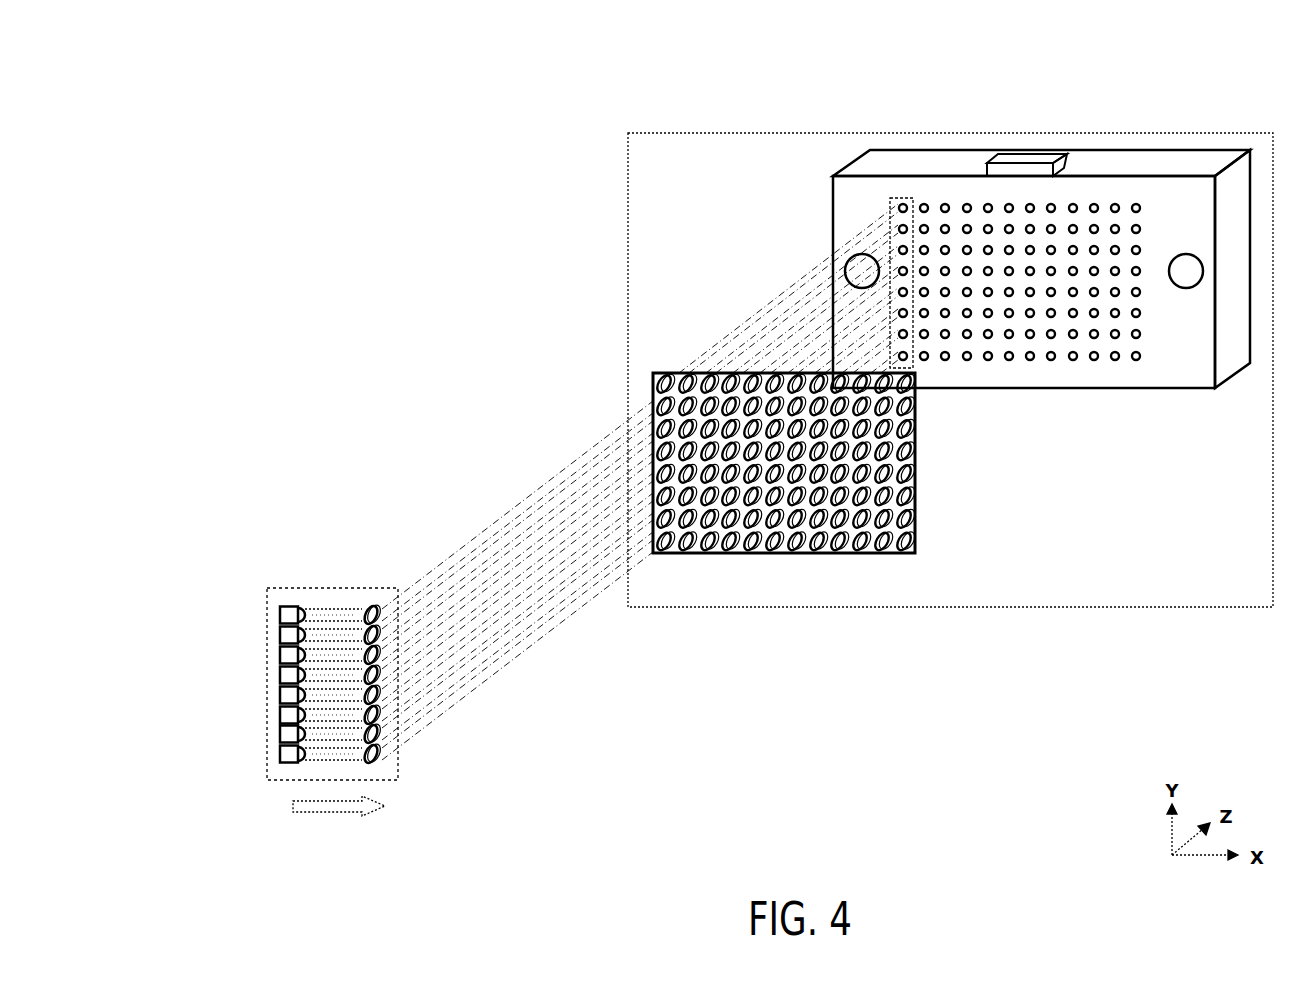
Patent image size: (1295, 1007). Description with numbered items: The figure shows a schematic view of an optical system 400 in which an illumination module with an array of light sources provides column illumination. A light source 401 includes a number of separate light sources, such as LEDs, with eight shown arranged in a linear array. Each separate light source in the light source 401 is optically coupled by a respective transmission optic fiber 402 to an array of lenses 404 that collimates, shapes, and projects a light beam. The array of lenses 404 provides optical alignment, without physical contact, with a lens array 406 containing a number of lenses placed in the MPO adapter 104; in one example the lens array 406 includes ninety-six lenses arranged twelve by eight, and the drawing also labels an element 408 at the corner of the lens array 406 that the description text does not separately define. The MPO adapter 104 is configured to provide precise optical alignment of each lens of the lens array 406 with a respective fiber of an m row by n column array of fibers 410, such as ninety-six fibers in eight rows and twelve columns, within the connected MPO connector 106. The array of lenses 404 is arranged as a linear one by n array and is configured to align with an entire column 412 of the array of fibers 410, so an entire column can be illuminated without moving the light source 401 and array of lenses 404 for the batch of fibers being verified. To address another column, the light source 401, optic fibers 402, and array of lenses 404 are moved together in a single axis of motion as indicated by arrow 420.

The system 400 is at (176, 98).
The MPO adapter 104 is at (1107, 607).
The MPO connector 106 is at (1187, 390).
The array of fibers 410 is at (1137, 365).
The column of the array of fibers 412 is at (898, 198).
The lens array 406 is at (898, 557).
The lens array substrate 408 is at (662, 366).
The light source 401 is at (286, 606).
The transmission optic fibers 402 is at (328, 608).
The array of lenses 404 is at (370, 607).
The arrow 420 is at (335, 809).